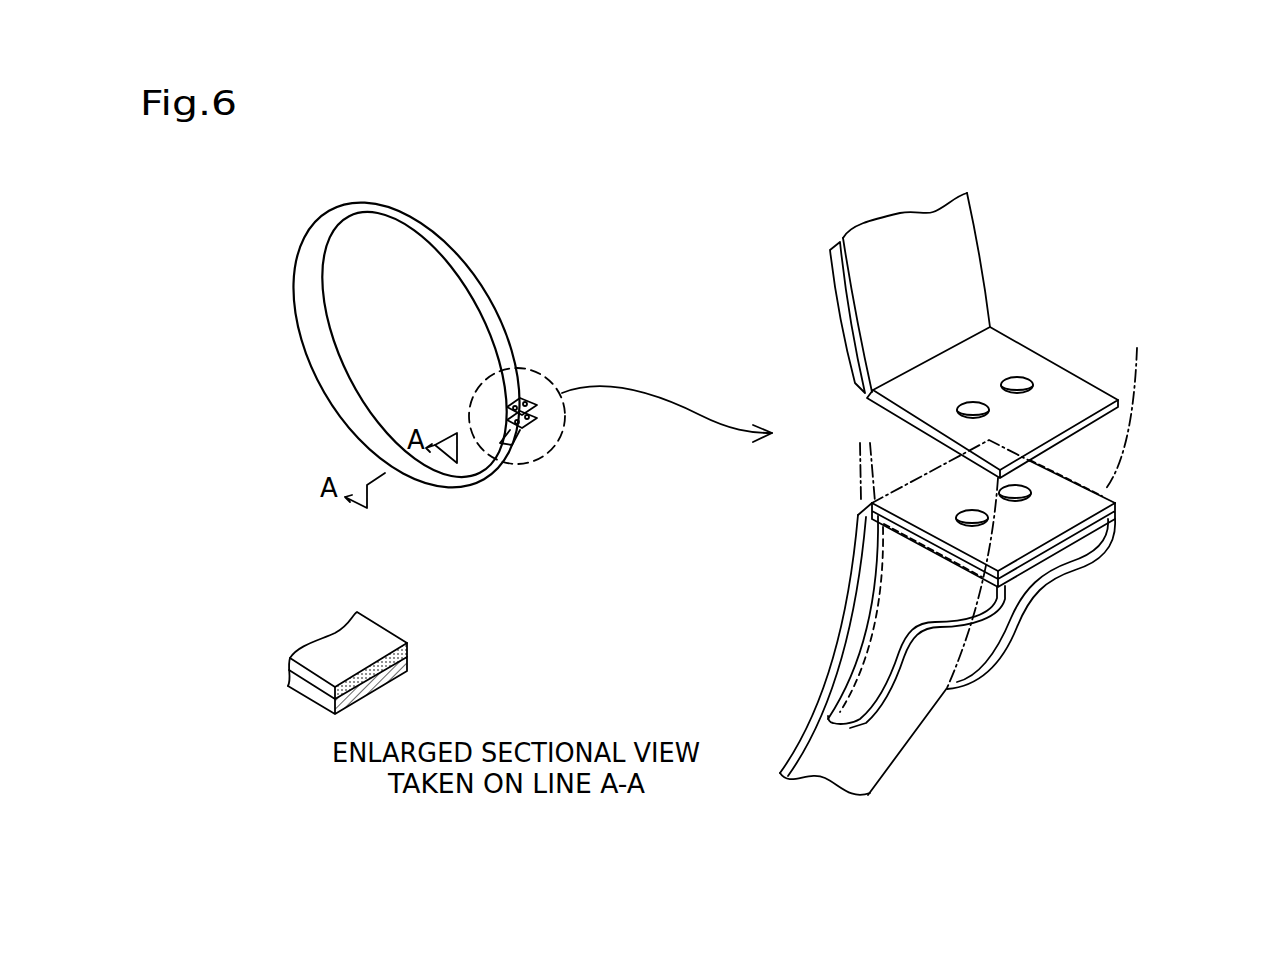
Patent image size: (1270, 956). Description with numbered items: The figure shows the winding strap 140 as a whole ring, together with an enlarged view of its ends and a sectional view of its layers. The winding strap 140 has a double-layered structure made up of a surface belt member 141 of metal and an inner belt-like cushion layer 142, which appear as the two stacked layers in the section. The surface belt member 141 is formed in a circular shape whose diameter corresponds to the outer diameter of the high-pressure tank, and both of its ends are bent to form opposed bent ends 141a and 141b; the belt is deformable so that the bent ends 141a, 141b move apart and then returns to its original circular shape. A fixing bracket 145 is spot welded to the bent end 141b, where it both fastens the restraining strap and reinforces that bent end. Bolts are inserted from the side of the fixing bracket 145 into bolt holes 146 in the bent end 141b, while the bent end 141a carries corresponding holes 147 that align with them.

The winding strap 140 is at (332, 390).
The surface belt member 141 is at (968, 242).
The cushion layer 142 is at (843, 322).
The bent end 141a is at (1078, 387).
The bent end 141b is at (1113, 513).
The holes in upper plate portion 147 is at (975, 405).
The bolt holes 146 is at (1000, 523).
The fixing bracket 145 is at (1070, 572).